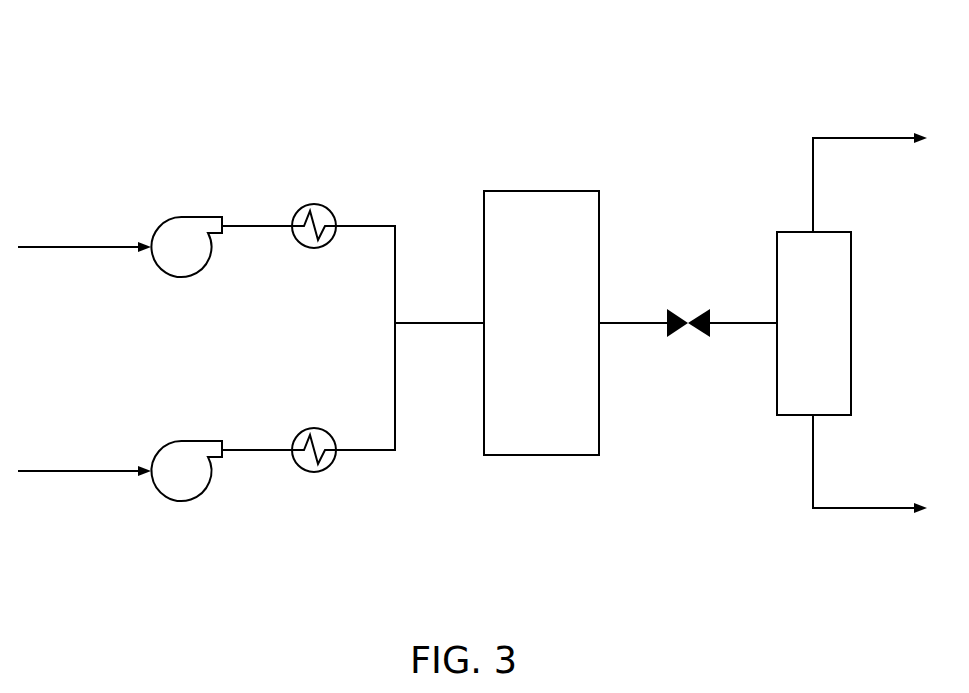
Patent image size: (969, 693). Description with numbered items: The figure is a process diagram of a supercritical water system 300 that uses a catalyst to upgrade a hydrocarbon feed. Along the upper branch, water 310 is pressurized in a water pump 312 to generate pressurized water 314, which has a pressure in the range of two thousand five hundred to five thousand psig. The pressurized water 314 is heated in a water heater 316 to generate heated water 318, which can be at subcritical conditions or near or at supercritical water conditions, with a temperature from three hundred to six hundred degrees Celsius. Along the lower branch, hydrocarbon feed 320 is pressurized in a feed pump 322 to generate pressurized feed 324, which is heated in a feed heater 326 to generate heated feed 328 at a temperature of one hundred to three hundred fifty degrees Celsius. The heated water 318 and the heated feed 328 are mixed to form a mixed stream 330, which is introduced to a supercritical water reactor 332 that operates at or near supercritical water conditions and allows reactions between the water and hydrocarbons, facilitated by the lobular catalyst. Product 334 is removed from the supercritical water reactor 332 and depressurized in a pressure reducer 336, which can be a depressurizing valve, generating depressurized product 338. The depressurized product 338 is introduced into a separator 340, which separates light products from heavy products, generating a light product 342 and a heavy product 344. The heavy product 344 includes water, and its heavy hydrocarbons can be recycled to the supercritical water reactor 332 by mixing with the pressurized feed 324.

The supercritical water system 300 is at (163, 54).
The water 310 is at (77, 248).
The water pump 312 is at (167, 218).
The pressurized water 314 is at (260, 226).
The water heater 316 is at (298, 242).
The heated water 318 is at (377, 226).
The hydrocarbon feed 320 is at (77, 472).
The feed pump 322 is at (167, 442).
The pressurized feed 324 is at (260, 450).
The feed heater 326 is at (298, 466).
The heated feed 328 is at (377, 450).
The mixed stream 330 is at (450, 323).
The supercritical water reactor 332 is at (538, 191).
The product 334 is at (645, 324).
The pressure reducer 336 is at (680, 312).
The depressurized product 338 is at (748, 325).
The separator 340 is at (852, 308).
The light product 342 is at (868, 138).
The heavy product 344 is at (890, 510).